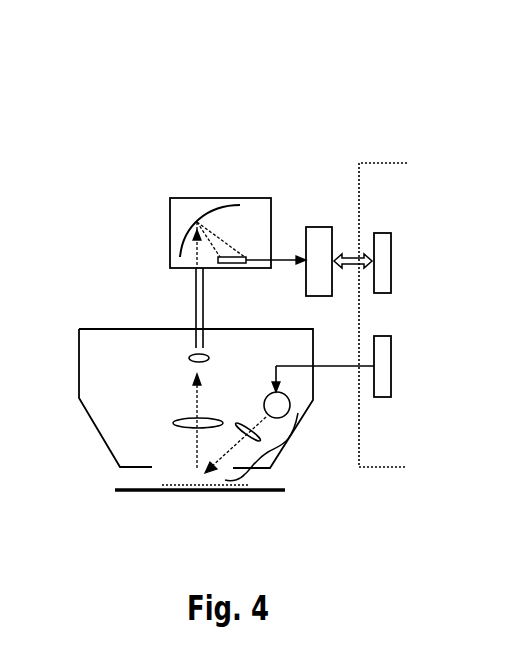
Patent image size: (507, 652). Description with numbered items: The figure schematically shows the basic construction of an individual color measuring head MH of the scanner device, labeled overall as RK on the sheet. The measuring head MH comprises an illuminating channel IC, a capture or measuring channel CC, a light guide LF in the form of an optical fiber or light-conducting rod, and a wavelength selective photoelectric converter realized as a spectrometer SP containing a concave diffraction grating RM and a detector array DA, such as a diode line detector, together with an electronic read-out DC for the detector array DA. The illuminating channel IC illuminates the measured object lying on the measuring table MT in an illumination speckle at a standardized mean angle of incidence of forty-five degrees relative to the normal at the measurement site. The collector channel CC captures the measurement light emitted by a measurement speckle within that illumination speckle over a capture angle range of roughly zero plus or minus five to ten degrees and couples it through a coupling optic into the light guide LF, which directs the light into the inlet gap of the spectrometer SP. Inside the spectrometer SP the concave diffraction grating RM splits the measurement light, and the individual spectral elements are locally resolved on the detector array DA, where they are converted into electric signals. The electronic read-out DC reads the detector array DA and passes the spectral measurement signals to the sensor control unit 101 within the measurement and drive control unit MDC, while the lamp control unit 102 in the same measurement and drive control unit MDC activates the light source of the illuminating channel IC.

The measuring system RK is at (14, 117).
The concave diffraction grating RM is at (210, 207).
The spectrometer SP is at (180, 212).
The light guide LF is at (196, 294).
The detector array DA is at (241, 268).
The color measuring head MH is at (93, 350).
The measuring channel CC is at (176, 352).
The illuminating channel IC is at (272, 457).
The measuring table MT is at (148, 493).
The measurement and drive control unit MDC is at (358, 163).
The electronic read-out DC is at (320, 227).
The sensor control unit 101 is at (392, 243).
The lamp control unit 102 is at (391, 372).